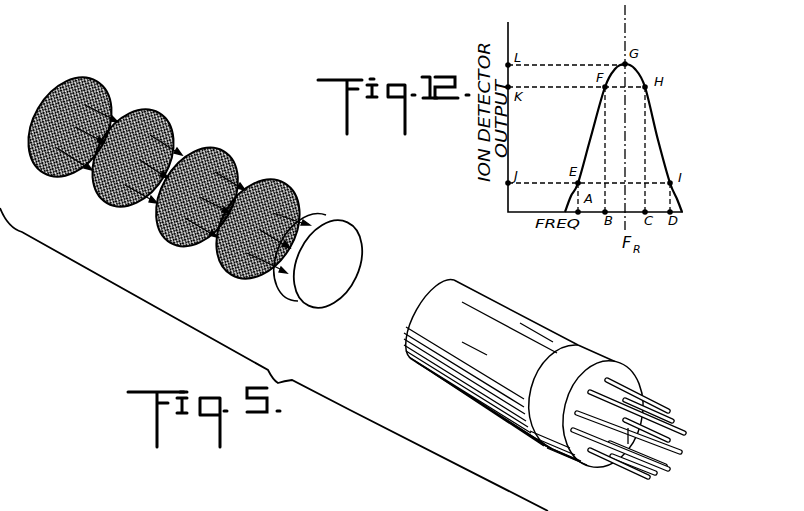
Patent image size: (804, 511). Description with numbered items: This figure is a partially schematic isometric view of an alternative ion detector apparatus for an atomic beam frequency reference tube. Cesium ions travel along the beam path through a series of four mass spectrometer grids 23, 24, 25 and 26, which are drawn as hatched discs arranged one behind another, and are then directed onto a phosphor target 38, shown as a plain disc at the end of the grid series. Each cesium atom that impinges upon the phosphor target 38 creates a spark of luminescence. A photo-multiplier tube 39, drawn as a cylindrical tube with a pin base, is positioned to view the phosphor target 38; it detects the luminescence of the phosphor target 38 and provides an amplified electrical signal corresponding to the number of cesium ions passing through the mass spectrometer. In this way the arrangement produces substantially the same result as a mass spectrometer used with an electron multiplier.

The mass spectrometer grid 23 is at (51, 177).
The mass spectrometer grid 24 is at (112, 208).
The mass spectrometer grid 25 is at (178, 242).
The mass spectrometer grid 26 is at (236, 276).
The phosphor target 38 is at (318, 306).
The photo-multiplier tube 39 is at (450, 393).